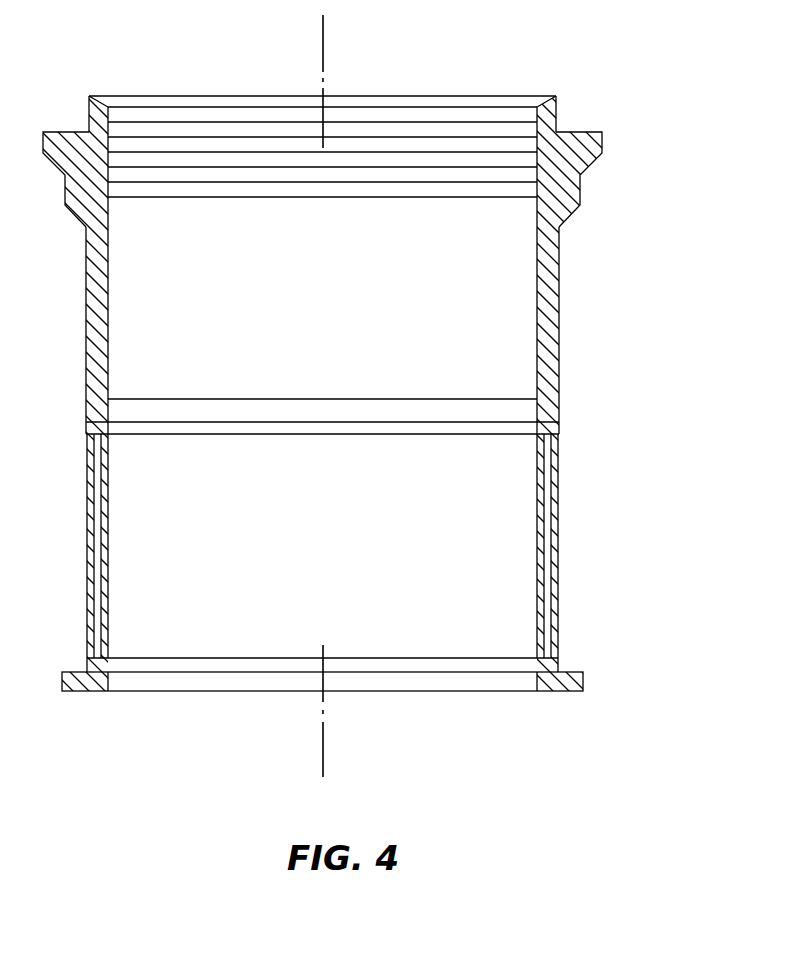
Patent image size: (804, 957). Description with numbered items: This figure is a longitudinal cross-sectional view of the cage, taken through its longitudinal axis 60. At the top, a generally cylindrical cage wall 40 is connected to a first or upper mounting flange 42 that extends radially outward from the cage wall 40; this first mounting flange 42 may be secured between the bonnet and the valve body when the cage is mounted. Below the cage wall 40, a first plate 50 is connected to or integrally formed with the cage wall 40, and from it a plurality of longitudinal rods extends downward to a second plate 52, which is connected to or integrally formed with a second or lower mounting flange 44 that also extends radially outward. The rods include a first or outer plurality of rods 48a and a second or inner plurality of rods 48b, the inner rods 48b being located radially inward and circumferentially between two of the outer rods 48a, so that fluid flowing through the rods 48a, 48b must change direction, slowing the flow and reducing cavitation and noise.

The longitudinal axis 60 is at (324, 33).
The first mounting flange 42 is at (600, 142).
The cage wall 40 is at (552, 298).
The first plate 50 is at (550, 430).
The first plurality of rods 48a is at (555, 503).
The second plurality of rods 48b is at (545, 553).
The second plate 52 is at (557, 663).
The second mounting flange 44 is at (583, 683).